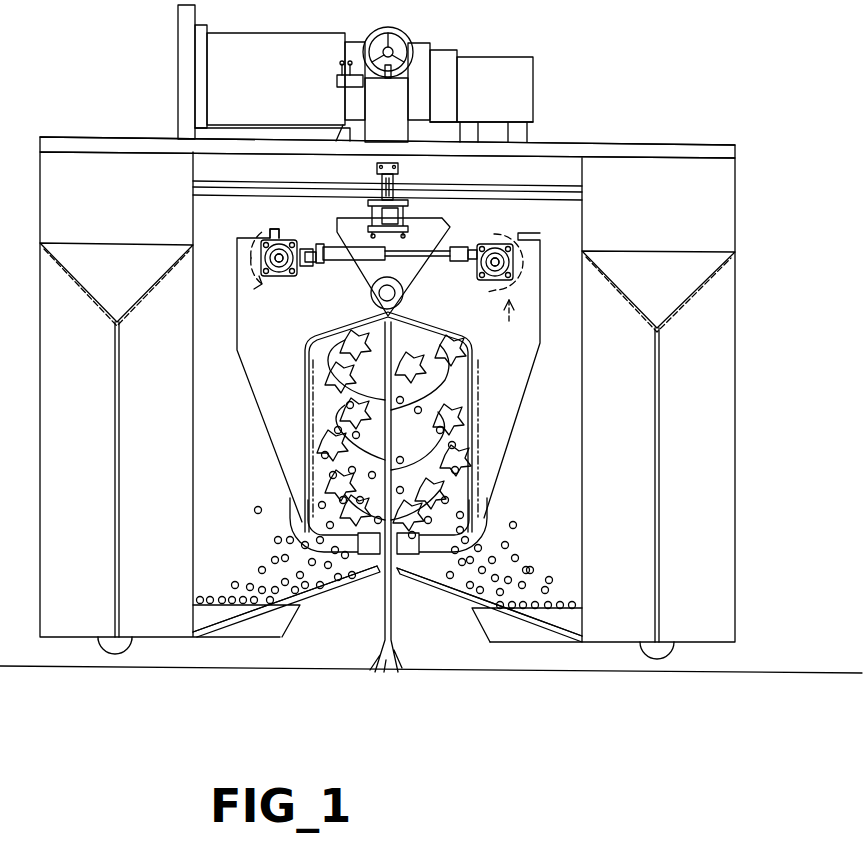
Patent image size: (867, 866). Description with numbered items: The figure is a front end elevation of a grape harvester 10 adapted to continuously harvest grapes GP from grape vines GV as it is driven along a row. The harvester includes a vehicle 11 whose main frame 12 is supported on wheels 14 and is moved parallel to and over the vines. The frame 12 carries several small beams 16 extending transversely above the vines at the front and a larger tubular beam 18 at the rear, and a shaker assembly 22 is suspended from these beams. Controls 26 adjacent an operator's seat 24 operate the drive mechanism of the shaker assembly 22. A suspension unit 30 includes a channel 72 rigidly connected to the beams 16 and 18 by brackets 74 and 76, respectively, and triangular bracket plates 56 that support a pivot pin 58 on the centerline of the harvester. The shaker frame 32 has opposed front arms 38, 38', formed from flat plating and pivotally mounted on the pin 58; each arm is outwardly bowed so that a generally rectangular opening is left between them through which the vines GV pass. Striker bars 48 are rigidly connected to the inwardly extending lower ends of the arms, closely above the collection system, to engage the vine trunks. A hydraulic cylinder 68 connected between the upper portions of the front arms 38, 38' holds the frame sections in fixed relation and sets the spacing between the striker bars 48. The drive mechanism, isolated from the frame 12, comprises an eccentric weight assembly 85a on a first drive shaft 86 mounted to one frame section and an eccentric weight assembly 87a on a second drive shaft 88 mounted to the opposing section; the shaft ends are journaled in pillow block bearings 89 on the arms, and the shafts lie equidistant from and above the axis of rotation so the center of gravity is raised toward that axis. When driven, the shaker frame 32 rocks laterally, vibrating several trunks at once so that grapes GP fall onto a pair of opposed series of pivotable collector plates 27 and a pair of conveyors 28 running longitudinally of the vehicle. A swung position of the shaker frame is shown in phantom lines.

The grape harvester 10 is at (610, 78).
The vehicle 11 is at (731, 135).
The main frame 12 is at (99, 140).
The wheels 14 is at (100, 660).
The small beams 16 is at (193, 190).
The tubular beam 18 is at (582, 175).
The shaker assembly 22 is at (573, 226).
The operator's seat 24 is at (416, 48).
The controls 26 is at (337, 81).
The collector plates 27 is at (460, 615).
The conveyors 28 is at (214, 586).
The suspension unit 30 is at (342, 219).
The shaker frame 32 is at (529, 456).
The front arm 38 is at (251, 375).
The front arm 38' is at (556, 375).
The striker bars 48 is at (367, 538).
The bracket plates 56 is at (374, 279).
The pivot pin 58 is at (381, 295).
The hydraulic cylinder 68 is at (326, 256).
The channel 72 is at (406, 214).
The brackets 74 is at (395, 188).
The bracket 76 is at (377, 170).
The eccentric weight assembly 85a is at (268, 218).
The first drive shaft 86 is at (283, 272).
The eccentric weight assembly 87a is at (504, 322).
The second drive shaft 88 is at (500, 250).
The pillow block bearings 89 is at (266, 252).
The grapes GP is at (274, 560).
The grape vines GV is at (386, 623).